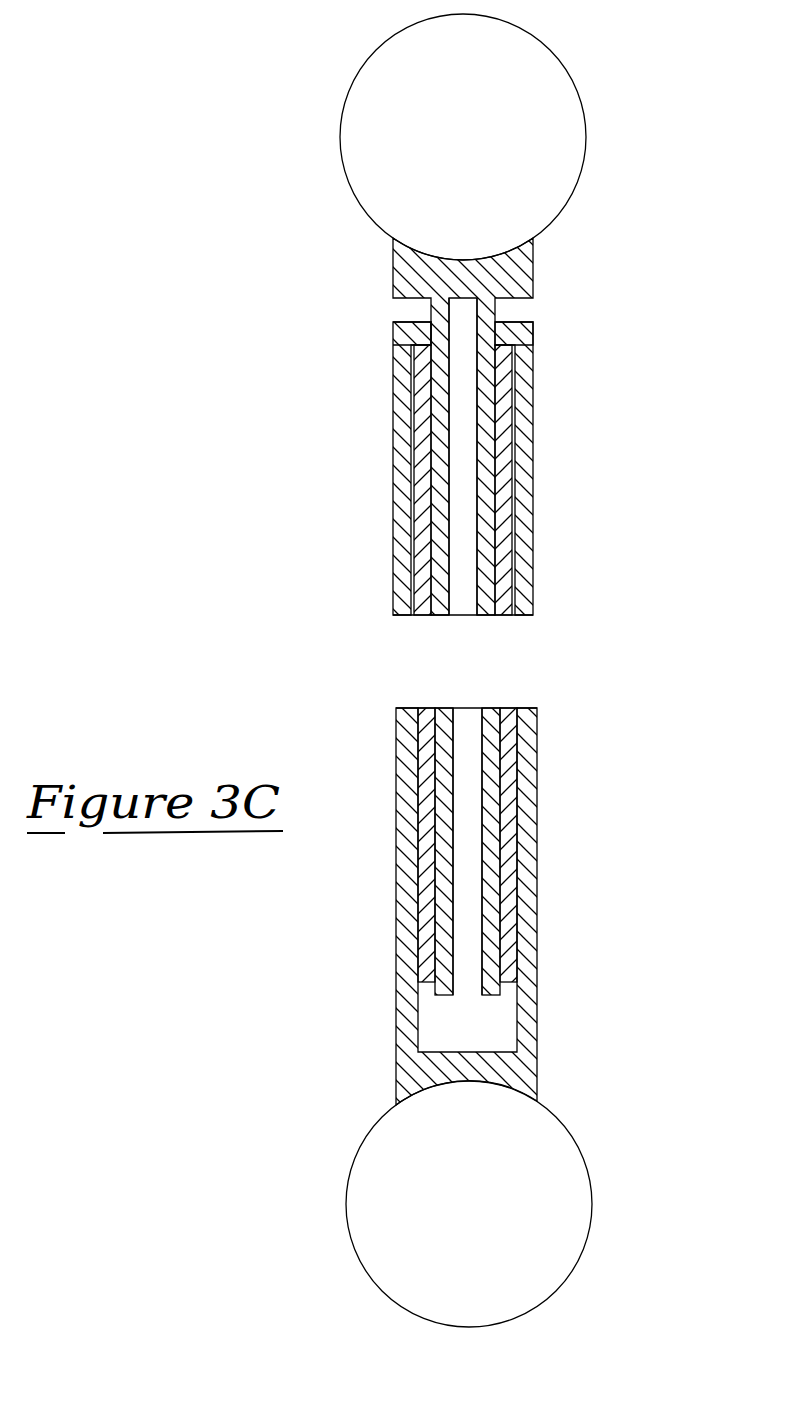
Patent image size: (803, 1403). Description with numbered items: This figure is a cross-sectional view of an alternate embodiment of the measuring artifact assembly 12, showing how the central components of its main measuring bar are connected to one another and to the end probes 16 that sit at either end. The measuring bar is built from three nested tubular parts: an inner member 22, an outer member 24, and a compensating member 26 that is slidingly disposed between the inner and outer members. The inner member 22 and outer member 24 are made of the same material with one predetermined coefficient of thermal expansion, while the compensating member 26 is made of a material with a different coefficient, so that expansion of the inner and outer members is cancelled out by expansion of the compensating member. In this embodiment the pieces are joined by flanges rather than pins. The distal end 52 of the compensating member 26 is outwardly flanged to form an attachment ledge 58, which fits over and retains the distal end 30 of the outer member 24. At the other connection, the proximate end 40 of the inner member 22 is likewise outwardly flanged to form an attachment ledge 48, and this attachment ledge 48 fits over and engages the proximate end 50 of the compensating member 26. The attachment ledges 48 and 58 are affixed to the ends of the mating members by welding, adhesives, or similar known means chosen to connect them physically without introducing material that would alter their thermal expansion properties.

The artifact assembly 12 is at (262, 492).
The end probes 16 is at (587, 148).
The inner member 22 is at (487, 708).
The outer member 24 is at (536, 468).
The compensating member 26 is at (505, 616).
The distal end of the outer member 30 is at (533, 423).
The proximate end of the inner member 40 is at (537, 1015).
The attachment ledge 48 is at (512, 988).
The proximate end of the compensating member 50 is at (512, 932).
The distal end of the compensating member 52 is at (533, 330).
The attachment ledge 58 is at (533, 380).